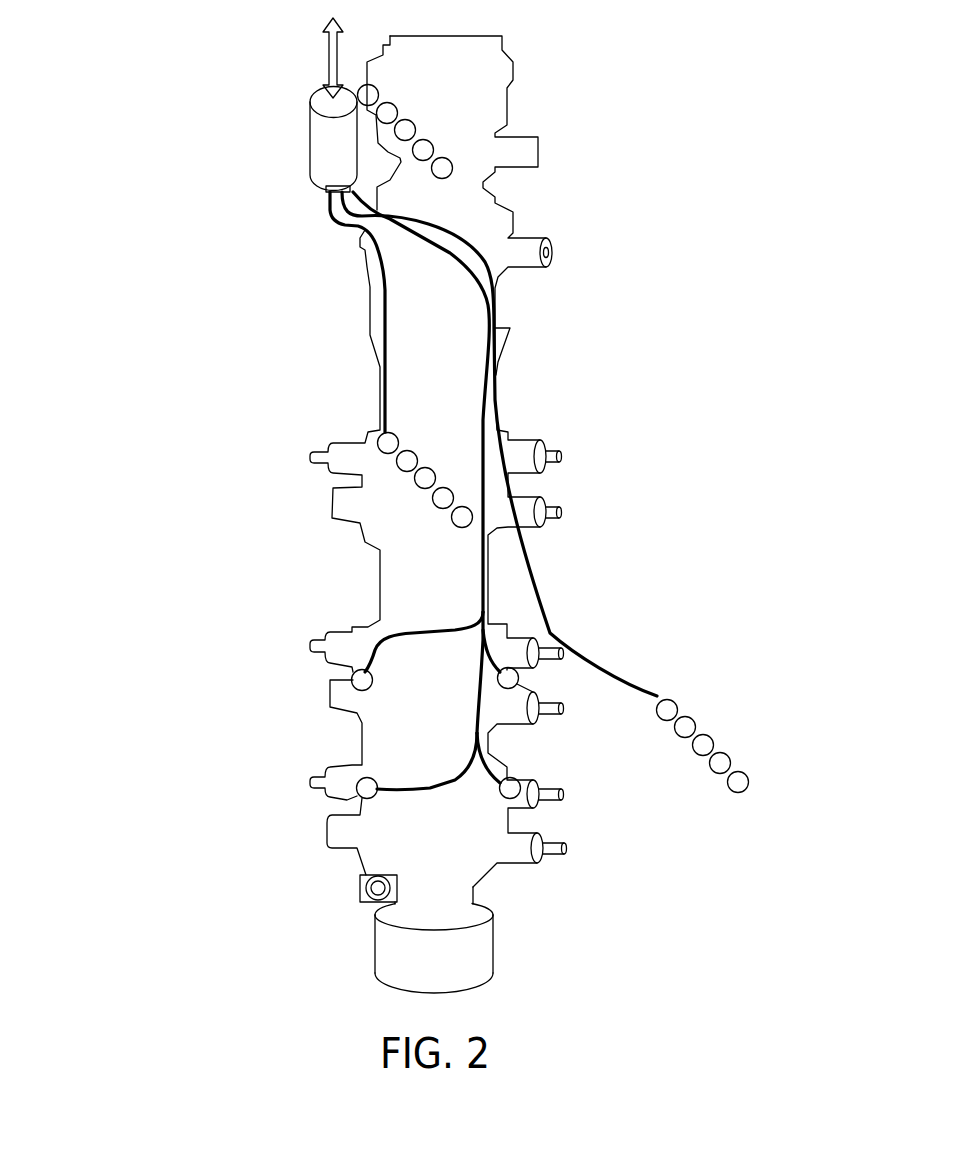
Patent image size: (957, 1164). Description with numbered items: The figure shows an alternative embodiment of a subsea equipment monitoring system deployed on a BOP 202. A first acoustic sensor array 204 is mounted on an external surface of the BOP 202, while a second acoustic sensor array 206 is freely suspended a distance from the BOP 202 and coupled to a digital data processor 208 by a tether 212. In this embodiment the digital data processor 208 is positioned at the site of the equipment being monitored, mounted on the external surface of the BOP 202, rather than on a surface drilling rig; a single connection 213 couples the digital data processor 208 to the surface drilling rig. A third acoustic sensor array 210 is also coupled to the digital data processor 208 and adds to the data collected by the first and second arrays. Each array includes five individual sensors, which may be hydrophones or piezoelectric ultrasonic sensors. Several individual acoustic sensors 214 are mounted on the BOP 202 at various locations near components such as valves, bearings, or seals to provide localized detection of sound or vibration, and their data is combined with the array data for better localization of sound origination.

The BOP 202 is at (472, 948).
The first acoustic sensor array 204 is at (407, 461).
The second acoustic sensor array 206 is at (685, 727).
The digital data processor 208 is at (320, 138).
The third acoustic sensor array 210 is at (405, 130).
The tether 212 is at (543, 596).
The single connection 213 is at (324, 32).
The individual acoustic sensors 214 is at (612, 740).